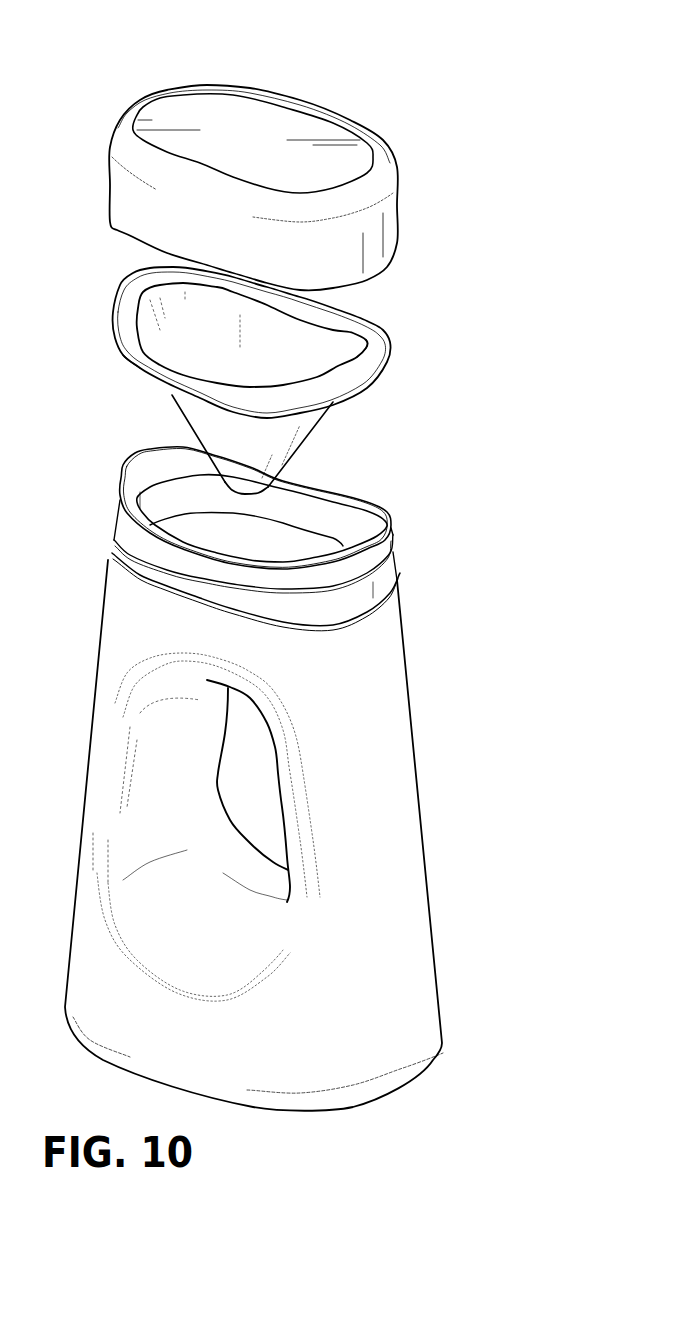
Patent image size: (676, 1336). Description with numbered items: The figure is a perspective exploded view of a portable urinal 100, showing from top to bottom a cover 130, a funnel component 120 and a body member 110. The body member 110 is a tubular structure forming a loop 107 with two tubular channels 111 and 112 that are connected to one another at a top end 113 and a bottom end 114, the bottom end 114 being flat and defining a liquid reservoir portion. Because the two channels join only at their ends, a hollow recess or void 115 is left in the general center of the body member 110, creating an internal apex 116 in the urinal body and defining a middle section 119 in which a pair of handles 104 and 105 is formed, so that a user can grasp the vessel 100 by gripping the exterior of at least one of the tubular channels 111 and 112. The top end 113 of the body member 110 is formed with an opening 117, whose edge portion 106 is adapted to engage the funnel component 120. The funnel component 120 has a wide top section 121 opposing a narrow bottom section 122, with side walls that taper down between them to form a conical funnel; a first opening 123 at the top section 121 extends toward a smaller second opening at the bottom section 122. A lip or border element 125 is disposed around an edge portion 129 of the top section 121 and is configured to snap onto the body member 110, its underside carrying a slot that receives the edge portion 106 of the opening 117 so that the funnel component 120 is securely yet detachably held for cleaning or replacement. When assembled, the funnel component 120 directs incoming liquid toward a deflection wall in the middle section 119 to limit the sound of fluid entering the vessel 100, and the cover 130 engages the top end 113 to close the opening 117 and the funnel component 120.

The portable urinal 100 is at (391, 80).
The cover 130 is at (242, 117).
The funnel component 120 is at (350, 322).
The edge portion of the top section 129 is at (130, 285).
The first opening 123 is at (140, 322).
The lip 125 is at (135, 358).
The top section 121 is at (328, 360).
The bottom section 122 is at (267, 478).
The opening 117 is at (310, 550).
The edge portion of the opening 106 is at (390, 508).
The body member 110 is at (147, 633).
The internal apex 116 is at (225, 642).
The top end 113 is at (243, 660).
The middle section 119 is at (223, 727).
The handle 104 is at (105, 743).
The handle 105 is at (347, 733).
The tubular channel 111 is at (118, 775).
The hollow recess 115 is at (262, 792).
The tubular channel 112 is at (395, 860).
The loop 107 is at (137, 898).
The bottom end 114 is at (257, 1050).